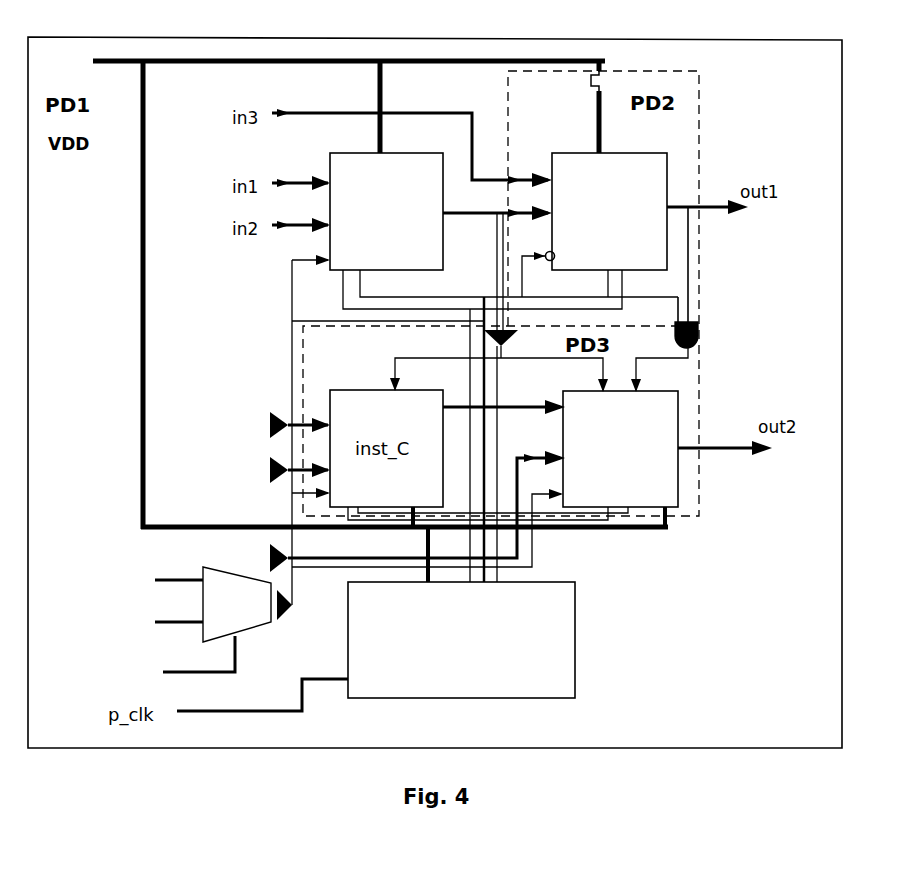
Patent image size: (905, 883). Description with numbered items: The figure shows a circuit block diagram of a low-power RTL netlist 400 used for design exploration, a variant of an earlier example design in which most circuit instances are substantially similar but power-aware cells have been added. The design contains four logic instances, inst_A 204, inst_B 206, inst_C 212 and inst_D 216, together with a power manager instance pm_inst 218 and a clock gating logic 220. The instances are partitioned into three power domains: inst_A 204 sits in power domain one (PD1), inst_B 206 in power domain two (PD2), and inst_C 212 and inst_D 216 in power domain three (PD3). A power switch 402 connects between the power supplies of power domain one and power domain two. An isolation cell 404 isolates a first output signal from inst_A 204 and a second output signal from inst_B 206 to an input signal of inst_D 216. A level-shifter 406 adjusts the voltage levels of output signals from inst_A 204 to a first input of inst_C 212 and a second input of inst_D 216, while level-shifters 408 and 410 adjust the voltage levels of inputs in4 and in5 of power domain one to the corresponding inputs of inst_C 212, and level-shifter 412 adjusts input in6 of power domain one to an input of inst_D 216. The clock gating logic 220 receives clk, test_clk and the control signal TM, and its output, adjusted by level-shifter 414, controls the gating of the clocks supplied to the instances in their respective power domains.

The integrated circuit chip 400 is at (530, 40).
The power switch 402 is at (600, 73).
The inst_A 204 is at (328, 243).
The inst_B 206 is at (667, 248).
The level-shifter 406 is at (490, 339).
The isolation cell 404 is at (700, 332).
The level-shifter 408 is at (268, 418).
The level-shifter 410 is at (268, 463).
The inst_C 212 is at (300, 488).
The level-shifter 412 is at (268, 548).
The clock gating logic 220 is at (203, 597).
The level-shifter 414 is at (292, 622).
The inst_D 216 is at (680, 478).
The power manager instance pm_inst 218 is at (575, 622).